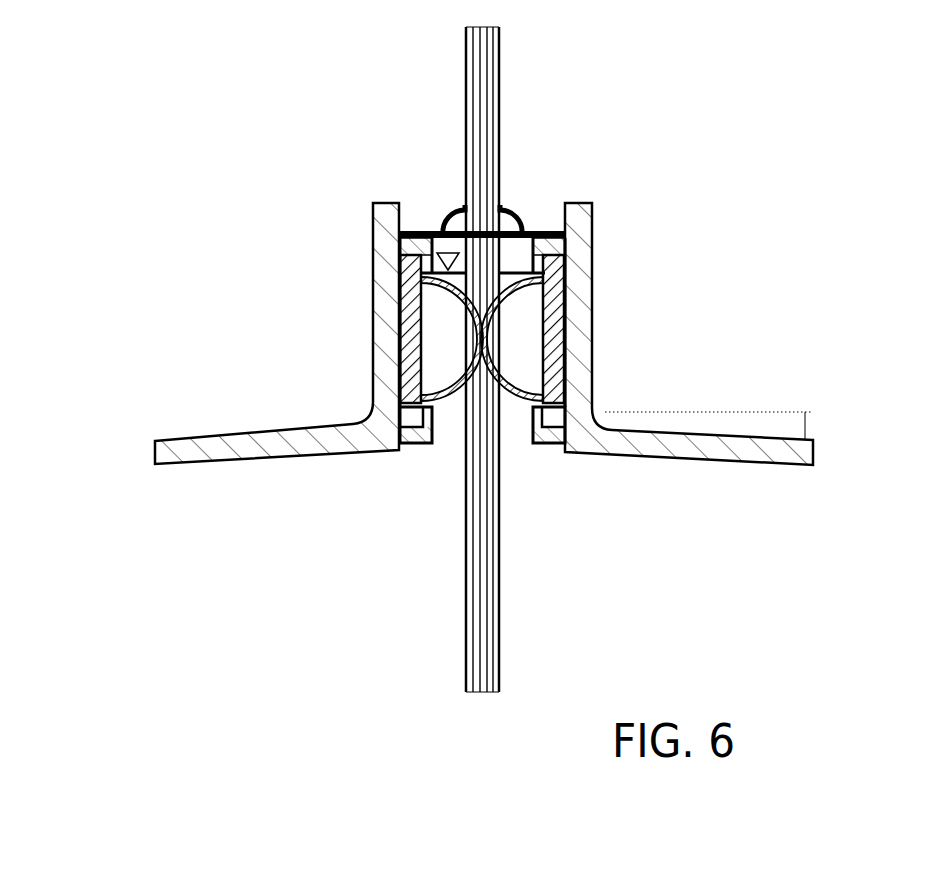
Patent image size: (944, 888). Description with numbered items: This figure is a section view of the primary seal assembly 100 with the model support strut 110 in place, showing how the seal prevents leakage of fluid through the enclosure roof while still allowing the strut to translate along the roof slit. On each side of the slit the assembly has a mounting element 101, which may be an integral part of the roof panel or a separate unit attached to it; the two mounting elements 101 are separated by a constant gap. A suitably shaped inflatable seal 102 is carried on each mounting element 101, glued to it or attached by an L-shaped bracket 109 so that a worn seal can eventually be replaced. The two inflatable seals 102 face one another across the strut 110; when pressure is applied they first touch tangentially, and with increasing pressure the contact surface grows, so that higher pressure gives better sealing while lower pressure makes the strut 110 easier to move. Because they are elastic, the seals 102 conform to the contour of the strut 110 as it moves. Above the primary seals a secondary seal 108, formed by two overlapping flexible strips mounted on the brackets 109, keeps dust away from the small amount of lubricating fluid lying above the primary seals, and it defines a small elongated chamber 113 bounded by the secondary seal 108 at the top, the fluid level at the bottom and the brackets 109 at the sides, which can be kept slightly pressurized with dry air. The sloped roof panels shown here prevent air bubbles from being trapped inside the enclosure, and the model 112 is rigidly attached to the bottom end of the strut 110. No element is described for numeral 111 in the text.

The primary seal assembly 100 is at (243, 563).
The mounting element 101 is at (247, 434).
The inflatable seal 102 is at (407, 317).
The secondary seal 108 is at (450, 228).
The "L"-shaped bracket 109 is at (538, 443).
The model support strut 110 is at (497, 117).
The diaphragm seal 111 is at (467, 342).
The model 112 is at (510, 272).
The small-elongated chamber 113 is at (433, 228).